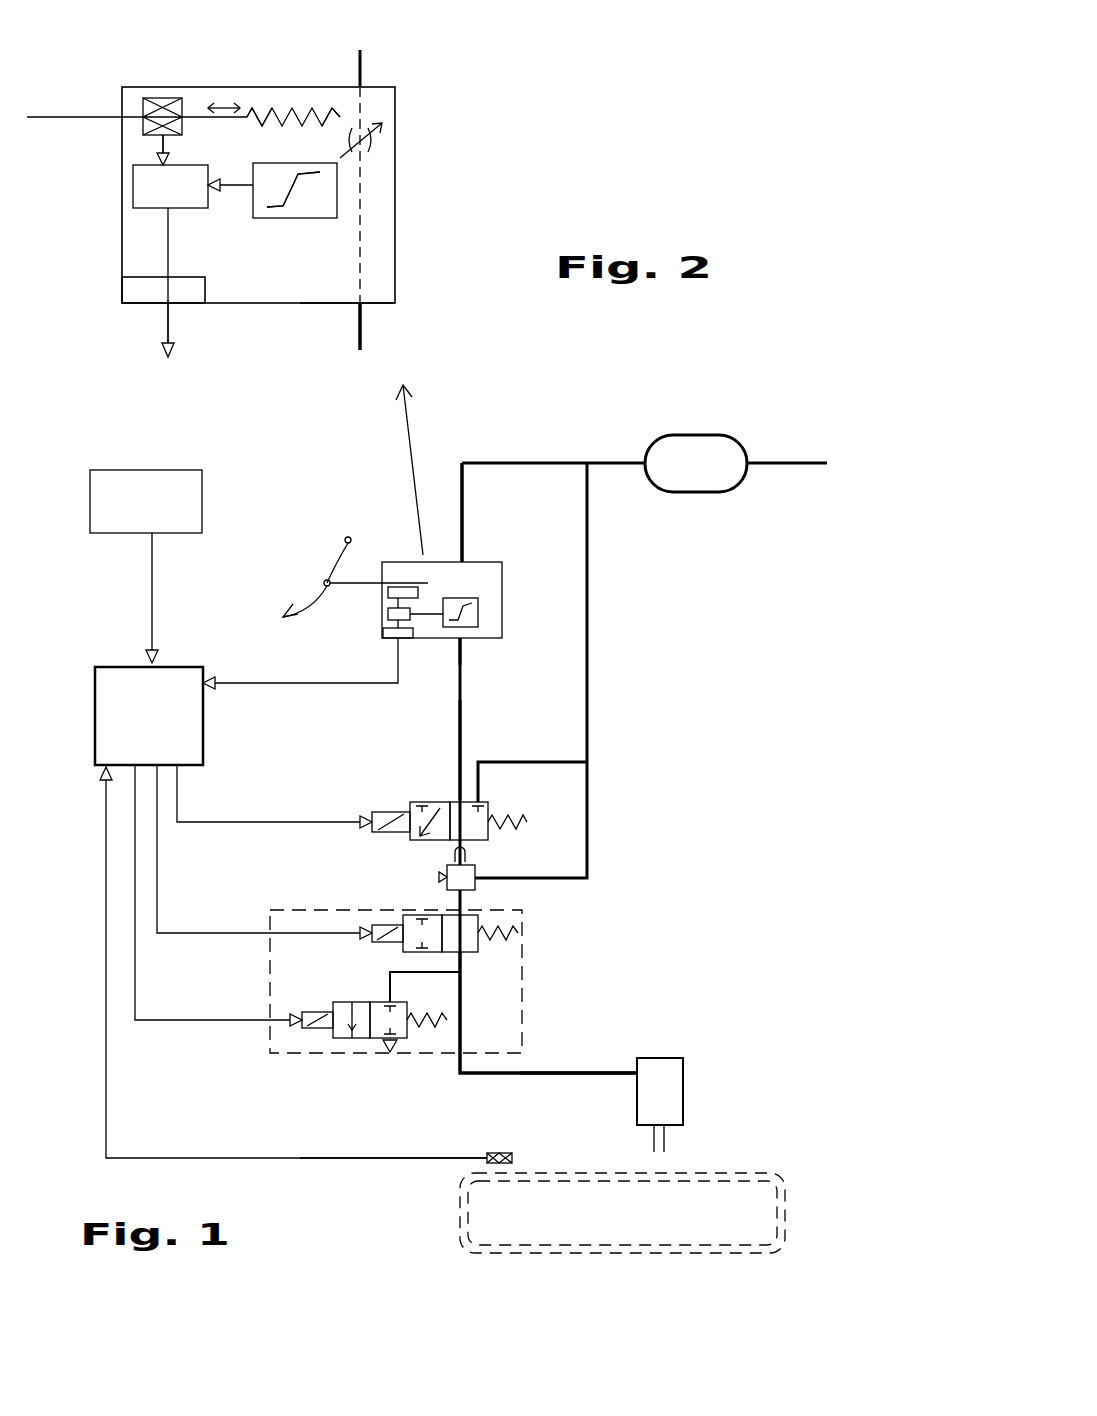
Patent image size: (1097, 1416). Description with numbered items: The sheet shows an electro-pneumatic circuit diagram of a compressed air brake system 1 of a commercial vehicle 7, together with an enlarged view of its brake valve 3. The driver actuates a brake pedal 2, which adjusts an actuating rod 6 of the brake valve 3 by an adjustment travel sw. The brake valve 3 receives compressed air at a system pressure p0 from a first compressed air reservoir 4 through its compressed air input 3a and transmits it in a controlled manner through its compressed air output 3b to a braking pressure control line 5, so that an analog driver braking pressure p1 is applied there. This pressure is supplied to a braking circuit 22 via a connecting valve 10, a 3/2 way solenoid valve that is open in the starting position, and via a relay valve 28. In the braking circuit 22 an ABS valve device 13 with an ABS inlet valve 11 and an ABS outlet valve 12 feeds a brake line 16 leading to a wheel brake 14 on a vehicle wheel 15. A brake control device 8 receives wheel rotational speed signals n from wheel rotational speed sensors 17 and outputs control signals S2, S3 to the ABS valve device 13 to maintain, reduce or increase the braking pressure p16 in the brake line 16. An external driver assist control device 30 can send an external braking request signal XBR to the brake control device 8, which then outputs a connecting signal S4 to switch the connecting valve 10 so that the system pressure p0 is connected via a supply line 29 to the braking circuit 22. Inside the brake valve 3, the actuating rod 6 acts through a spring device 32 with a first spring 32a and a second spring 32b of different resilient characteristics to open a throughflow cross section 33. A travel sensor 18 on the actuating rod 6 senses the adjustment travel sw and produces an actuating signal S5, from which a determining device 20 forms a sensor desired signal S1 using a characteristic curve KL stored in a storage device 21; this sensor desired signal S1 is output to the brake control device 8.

In FIG. 1, the compressed air brake system 1 is at (757, 423).
In FIG. 1, the brake pedal 2 is at (337, 553).
In FIG. 2, the driver brake valve 3 is at (122, 87).
In FIG. 1, the driver brake valve 3 is at (502, 562).
In FIG. 2, the compressed air input 3a is at (360, 88).
In FIG. 1, the compressed air input 3a is at (463, 560).
In FIG. 2, the compressed air output 3b is at (360, 303).
In FIG. 1, the compressed air output 3b is at (467, 643).
In FIG. 1, the first compressed air reservoir 4 is at (703, 445).
In FIG. 2, the braking pressure control line 5 is at (360, 330).
In FIG. 1, the braking pressure control line 5 is at (455, 715).
In FIG. 2, the actuating rod 6 is at (100, 117).
In FIG. 1, the actuating rod 6 is at (360, 583).
In FIG. 1, the vehicle 7 is at (820, 427).
In FIG. 1, the brake control device 8 is at (115, 665).
In FIG. 1, the connecting valve 10 is at (490, 803).
In FIG. 1, the ABS inlet valve 11 is at (478, 952).
In FIG. 1, the ABS outlet valve 12 is at (342, 1002).
In FIG. 1, the ABS valve device 13 is at (270, 1045).
In FIG. 1, the wheel brake 14 is at (668, 1082).
In FIG. 1, the vehicle wheel 15 is at (718, 1190).
In FIG. 1, the brake line 16 is at (515, 1073).
In FIG. 1, the wheel rotational speed sensor 17 is at (487, 1153).
In FIG. 2, the travel sensor 18 is at (170, 98).
In FIG. 2, the determining device 20 is at (133, 185).
In FIG. 2, the characteristic curve storage device 21 is at (307, 218).
In FIG. 1, the braking circuit 22 is at (727, 970).
In FIG. 1, the relay valve 28 is at (447, 868).
In FIG. 1, the supply line 29 is at (518, 762).
In FIG. 1, the external driver assist control device 30 is at (122, 468).
In FIG. 2, the spring device 32 is at (285, 100).
In FIG. 2, the first spring 32a is at (275, 112).
In FIG. 2, the second spring 32b is at (330, 100).
In FIG. 2, the throughflow cross section 33 is at (372, 140).
In FIG. 2, the sensor desired signal S1 is at (170, 330).
In FIG. 1, the sensor desired signal S1 is at (300, 663).
In FIG. 1, the control signal S2 is at (250, 930).
In FIG. 1, the control signal S3 is at (240, 1018).
In FIG. 1, the connecting signal S4 is at (290, 822).
In FIG. 2, the actuating signal S5 is at (165, 137).
In FIG. 1, the external braking request signal XBR is at (155, 583).
In FIG. 2, the characteristic curve KL is at (337, 185).
In FIG. 2, the adjustment travel sw is at (225, 100).
In FIG. 2, the system pressure p0 is at (365, 60).
In FIG. 1, the system pressure p0 is at (667, 465).
In FIG. 2, the analog driver braking pressure p1 is at (358, 340).
In FIG. 1, the analog driver braking pressure p1 is at (455, 752).
In FIG. 1, the analog operating braking pressure p16 is at (560, 1073).
In FIG. 1, the wheel rotational speed signal n is at (383, 1160).